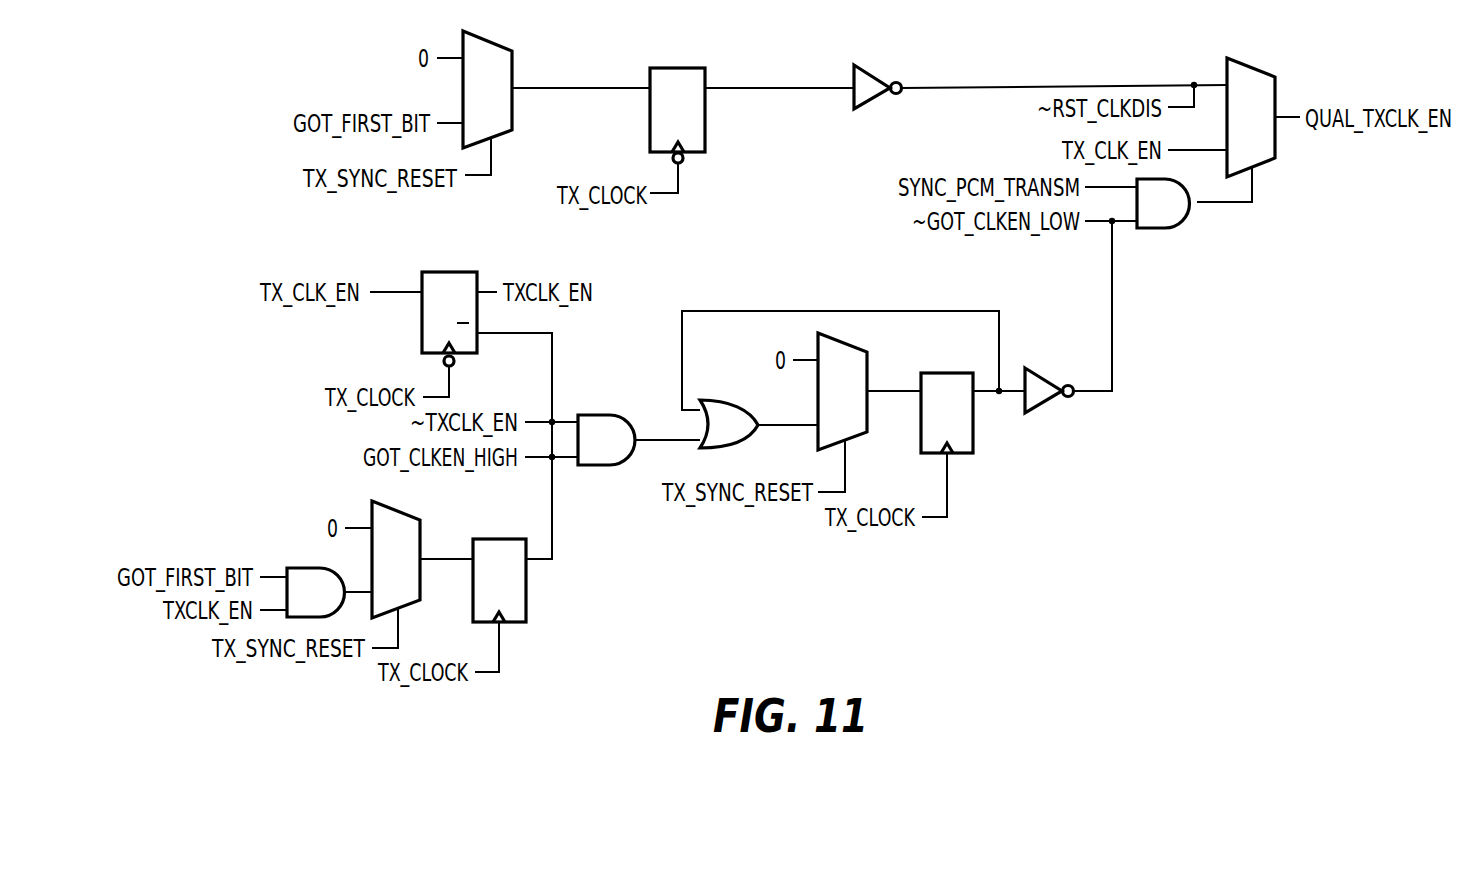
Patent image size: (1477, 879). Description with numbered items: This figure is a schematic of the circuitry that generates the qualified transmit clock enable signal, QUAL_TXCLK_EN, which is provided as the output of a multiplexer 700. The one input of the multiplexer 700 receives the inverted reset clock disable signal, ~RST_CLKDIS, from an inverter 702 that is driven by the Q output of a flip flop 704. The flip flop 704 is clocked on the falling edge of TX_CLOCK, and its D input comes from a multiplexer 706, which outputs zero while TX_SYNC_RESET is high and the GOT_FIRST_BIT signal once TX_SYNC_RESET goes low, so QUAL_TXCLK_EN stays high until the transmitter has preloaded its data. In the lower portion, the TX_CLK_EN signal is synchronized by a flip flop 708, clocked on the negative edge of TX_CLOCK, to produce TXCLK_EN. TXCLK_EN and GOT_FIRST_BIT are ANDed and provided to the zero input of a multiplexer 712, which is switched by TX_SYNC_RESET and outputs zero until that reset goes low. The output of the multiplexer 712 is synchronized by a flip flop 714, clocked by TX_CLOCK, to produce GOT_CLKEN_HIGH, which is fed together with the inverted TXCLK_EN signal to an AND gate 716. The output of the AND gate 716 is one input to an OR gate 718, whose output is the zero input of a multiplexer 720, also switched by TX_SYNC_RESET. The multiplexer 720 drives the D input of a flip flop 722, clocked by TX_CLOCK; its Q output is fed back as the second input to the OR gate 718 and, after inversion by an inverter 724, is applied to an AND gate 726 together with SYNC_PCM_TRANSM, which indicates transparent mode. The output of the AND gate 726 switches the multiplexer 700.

The multiplexer 700 is at (1250, 63).
The inverter 702 is at (867, 63).
The flip flop 704 is at (685, 68).
The multiplexer 706 is at (487, 33).
The flip flop 708 is at (452, 272).
The multiplexer 712 is at (397, 513).
The flip flop 714 is at (517, 623).
The AND gate 716 is at (600, 415).
The OR gate 718 is at (720, 453).
The multiplexer 720 is at (847, 343).
The flip flop 722 is at (963, 455).
The inverter 724 is at (1045, 403).
The AND gate 726 is at (1168, 229).